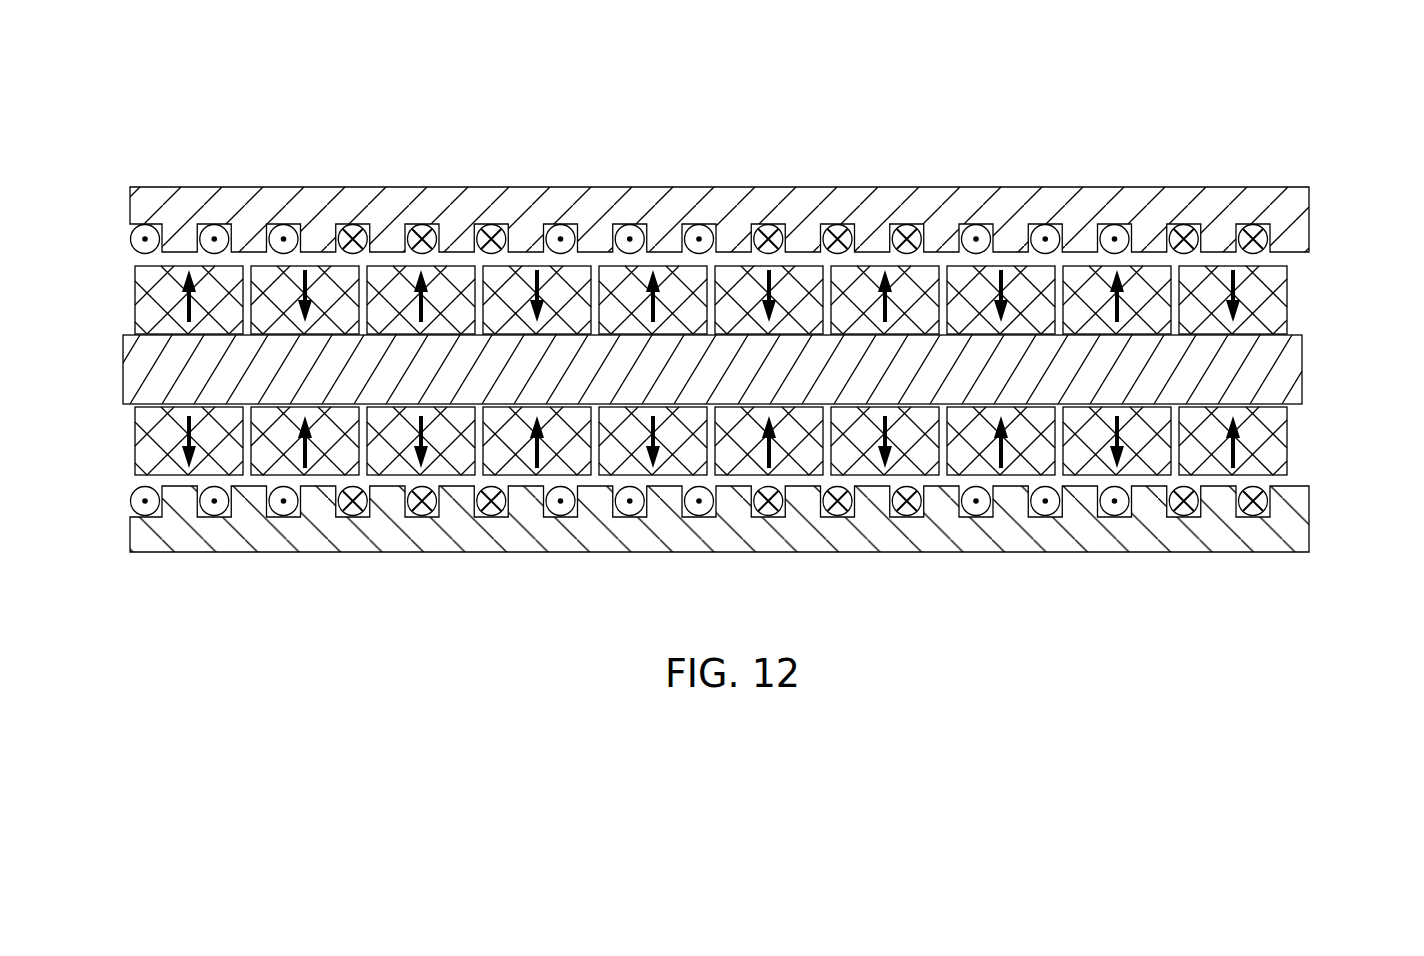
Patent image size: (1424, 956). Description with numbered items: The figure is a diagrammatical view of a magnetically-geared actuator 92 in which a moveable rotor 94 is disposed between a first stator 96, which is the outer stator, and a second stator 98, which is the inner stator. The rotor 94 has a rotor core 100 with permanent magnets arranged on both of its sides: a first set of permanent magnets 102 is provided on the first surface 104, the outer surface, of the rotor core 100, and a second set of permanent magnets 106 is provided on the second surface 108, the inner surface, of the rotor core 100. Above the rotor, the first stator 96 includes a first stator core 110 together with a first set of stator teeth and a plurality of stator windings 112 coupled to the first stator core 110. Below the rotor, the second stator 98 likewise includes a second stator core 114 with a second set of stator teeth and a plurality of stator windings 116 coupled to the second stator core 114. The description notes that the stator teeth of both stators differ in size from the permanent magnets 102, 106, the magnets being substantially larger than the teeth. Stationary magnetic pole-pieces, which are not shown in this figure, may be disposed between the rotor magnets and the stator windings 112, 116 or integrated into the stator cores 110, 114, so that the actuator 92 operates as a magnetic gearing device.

The magnetically-geared actuator 92 is at (1295, 83).
The moveable rotor 94 is at (115, 265).
The first stator 96 is at (115, 188).
The second stator 98 is at (115, 486).
The rotor core 100 is at (1302, 369).
The first set of permanent magnets 102 is at (1288, 300).
The first surface of the rotor core 104 is at (866, 316).
The second set of permanent magnets 106 is at (1288, 439).
The second surface of the rotor core 108 is at (1038, 408).
The first stator core 110 is at (688, 197).
The stator windings 112 is at (350, 237).
The second stator core 114 is at (472, 538).
The stator windings 116 is at (347, 503).